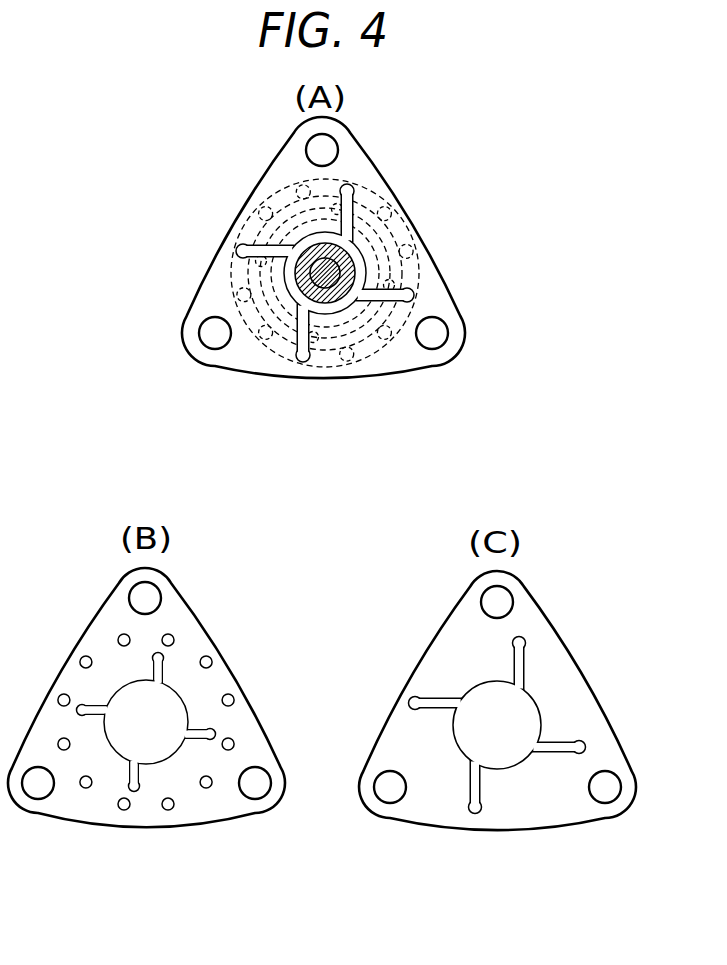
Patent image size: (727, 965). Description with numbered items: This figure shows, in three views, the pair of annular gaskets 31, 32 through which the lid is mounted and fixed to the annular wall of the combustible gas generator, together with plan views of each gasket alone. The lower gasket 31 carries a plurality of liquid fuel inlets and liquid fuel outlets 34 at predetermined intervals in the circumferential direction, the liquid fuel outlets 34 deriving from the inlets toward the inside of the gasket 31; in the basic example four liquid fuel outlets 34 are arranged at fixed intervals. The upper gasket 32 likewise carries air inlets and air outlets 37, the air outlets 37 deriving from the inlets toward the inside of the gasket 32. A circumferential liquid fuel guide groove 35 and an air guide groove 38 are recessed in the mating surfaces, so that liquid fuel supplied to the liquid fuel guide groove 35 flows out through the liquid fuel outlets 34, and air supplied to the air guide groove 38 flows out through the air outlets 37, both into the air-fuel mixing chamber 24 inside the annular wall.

The air-fuel mixing chamber 24 is at (277, 274).
The gasket 31 is at (190, 645).
The gasket 32 is at (368, 183).
The liquid fuel outlets 34 is at (162, 683).
The liquid fuel guide groove 35 is at (378, 232).
The air outlets 37 is at (523, 683).
The air guide groove 38 is at (413, 266).